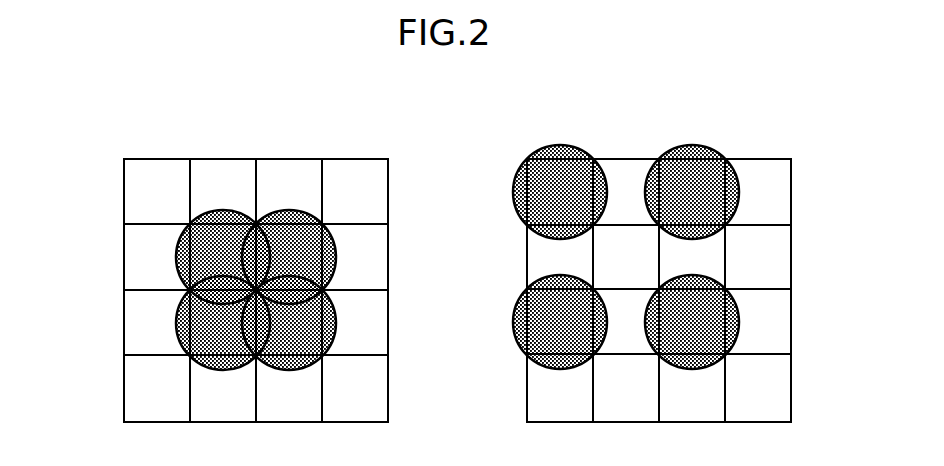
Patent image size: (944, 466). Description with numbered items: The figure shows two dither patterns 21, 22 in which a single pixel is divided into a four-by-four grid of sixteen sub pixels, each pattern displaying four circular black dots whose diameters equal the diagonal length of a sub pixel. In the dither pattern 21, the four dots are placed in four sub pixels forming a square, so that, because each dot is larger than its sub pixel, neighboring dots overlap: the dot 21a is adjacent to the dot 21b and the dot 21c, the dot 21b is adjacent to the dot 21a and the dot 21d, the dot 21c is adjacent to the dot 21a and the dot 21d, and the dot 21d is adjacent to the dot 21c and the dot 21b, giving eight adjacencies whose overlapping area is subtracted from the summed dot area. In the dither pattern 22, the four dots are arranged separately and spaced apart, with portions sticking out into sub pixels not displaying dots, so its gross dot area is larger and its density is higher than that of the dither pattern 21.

The dither pattern 21 is at (366, 148).
The dot 21a is at (178, 253).
The dot 21b is at (334, 252).
The dot 21c is at (178, 317).
The dot 21d is at (334, 316).
The dither pattern 22 is at (768, 152).